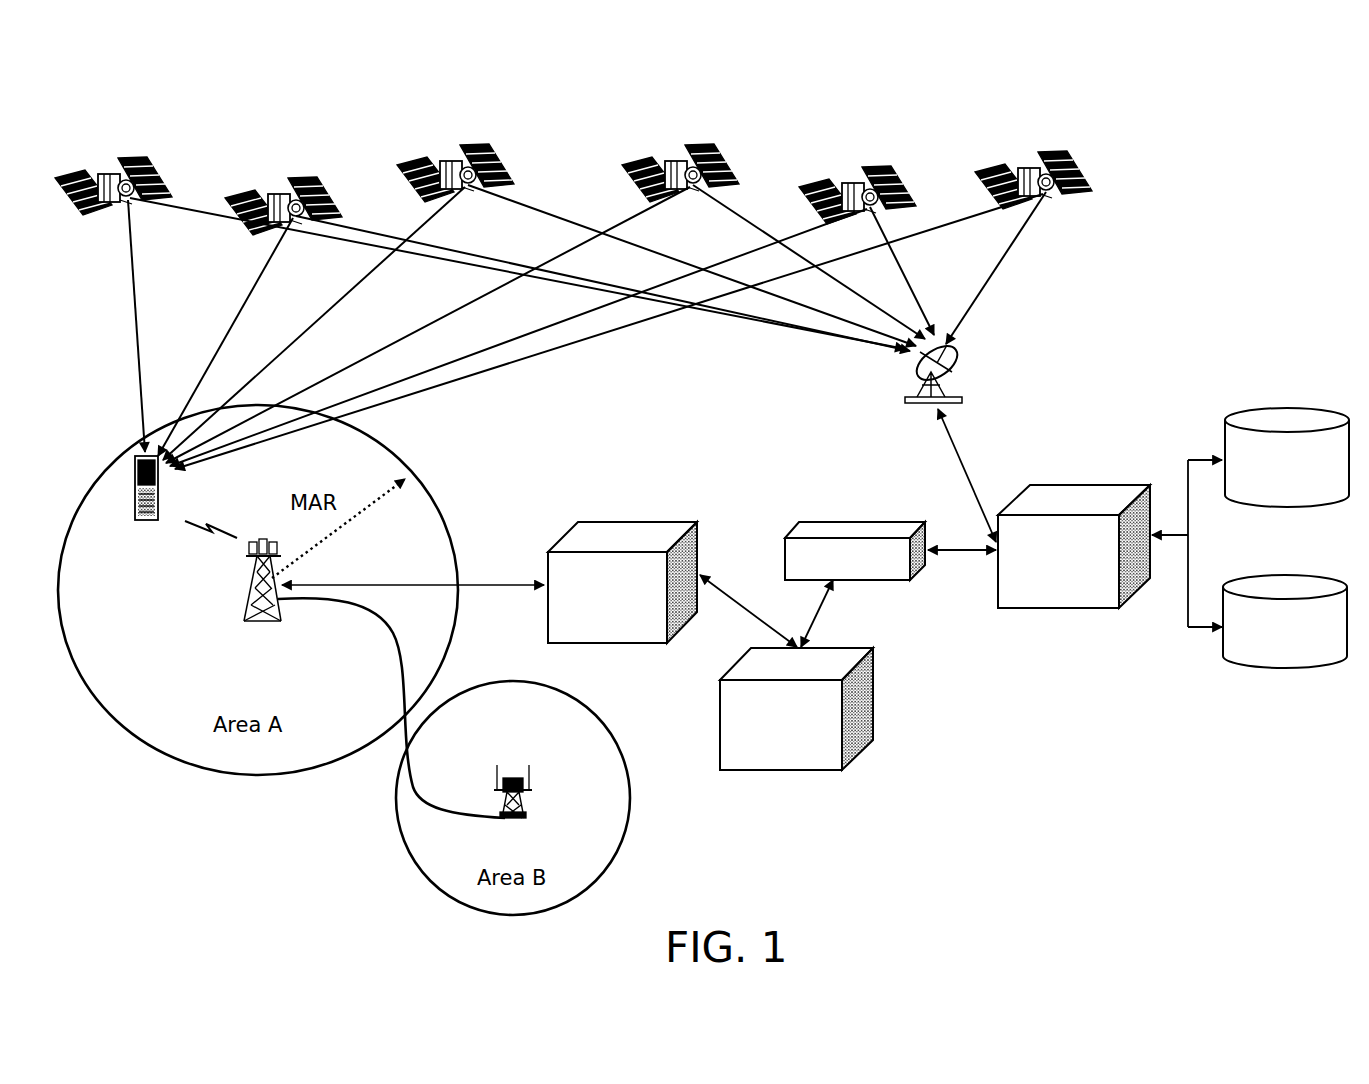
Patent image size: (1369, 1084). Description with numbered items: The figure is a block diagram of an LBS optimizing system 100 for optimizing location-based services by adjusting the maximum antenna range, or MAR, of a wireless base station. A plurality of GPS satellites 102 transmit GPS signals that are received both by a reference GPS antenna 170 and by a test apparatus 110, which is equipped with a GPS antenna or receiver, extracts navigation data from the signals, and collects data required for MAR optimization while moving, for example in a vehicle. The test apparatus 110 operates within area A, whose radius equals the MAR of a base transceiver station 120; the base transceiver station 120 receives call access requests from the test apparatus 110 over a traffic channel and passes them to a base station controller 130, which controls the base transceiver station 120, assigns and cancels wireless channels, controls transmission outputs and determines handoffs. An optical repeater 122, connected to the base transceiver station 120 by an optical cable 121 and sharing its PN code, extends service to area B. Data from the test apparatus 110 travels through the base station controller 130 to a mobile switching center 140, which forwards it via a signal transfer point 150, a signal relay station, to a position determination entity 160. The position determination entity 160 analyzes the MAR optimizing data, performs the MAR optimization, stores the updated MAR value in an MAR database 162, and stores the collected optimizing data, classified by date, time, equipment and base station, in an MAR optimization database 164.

The LBS optimizing system 100 is at (1272, 121).
The GPS satellites 102 is at (124, 158).
The test apparatus 110 is at (135, 518).
The base transceiver station 120 is at (246, 589).
The optical cable 121 is at (412, 798).
The optical repeater 122 is at (498, 770).
The base station controller 130 is at (597, 522).
The mobile switching center 140 is at (760, 773).
The signal transfer point 150 is at (810, 522).
The position determination entity 160 is at (1077, 485).
The MAR database 162 is at (1283, 408).
The MAR optimization database 164 is at (1283, 670).
The reference GPS antenna 170 is at (976, 371).